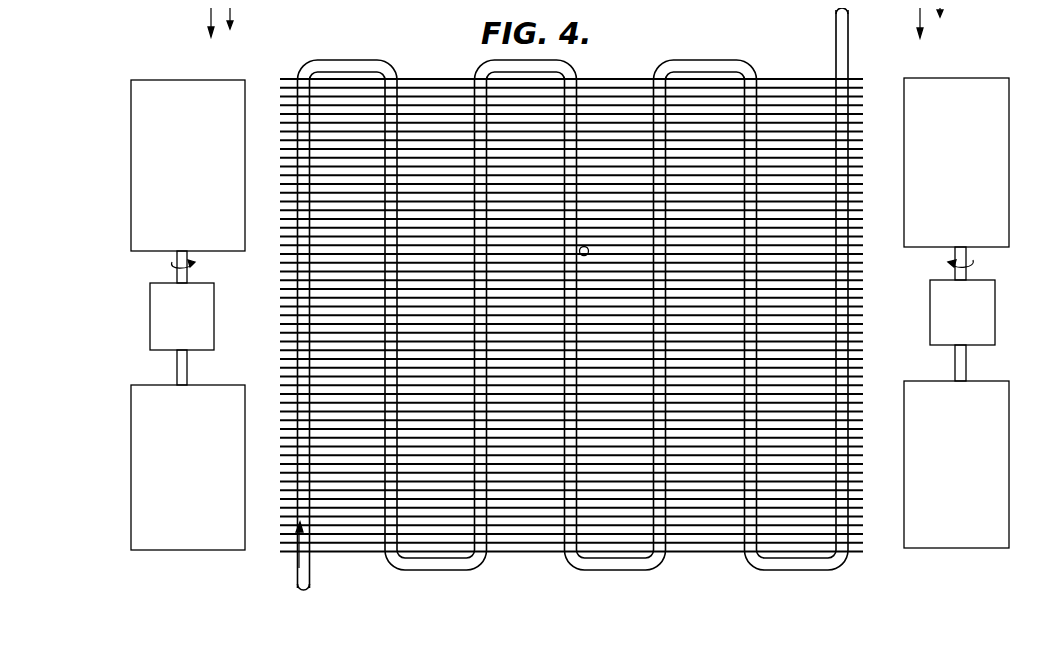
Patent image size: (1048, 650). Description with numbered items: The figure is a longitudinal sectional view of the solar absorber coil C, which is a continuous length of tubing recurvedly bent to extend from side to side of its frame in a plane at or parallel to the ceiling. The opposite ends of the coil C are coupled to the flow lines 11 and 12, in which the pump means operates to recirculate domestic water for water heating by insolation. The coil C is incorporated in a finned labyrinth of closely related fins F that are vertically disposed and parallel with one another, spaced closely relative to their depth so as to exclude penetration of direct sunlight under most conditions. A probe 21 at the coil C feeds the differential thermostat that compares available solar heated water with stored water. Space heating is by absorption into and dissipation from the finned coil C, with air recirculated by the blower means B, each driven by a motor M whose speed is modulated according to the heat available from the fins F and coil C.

The flow line 11 is at (289, 561).
The flow line 12 is at (828, 20).
The probe 21 is at (632, 236).
The blower means B is at (566, 279).
The solar absorber coil C is at (465, 558).
The fins F is at (427, 69).
The motor M is at (572, 315).